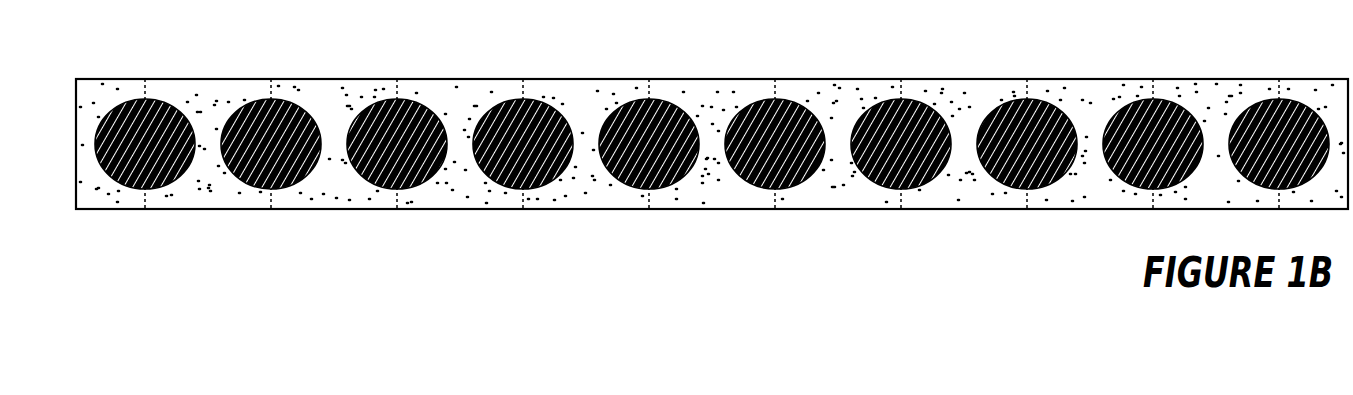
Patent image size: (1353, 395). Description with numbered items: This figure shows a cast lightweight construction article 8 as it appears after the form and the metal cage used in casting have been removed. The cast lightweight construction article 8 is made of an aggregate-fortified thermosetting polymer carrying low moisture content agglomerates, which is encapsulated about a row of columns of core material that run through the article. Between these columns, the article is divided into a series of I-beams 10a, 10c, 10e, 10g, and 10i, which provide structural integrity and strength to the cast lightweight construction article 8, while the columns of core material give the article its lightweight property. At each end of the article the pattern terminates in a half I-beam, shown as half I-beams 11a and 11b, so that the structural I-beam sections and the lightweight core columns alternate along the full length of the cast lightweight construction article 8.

The cast lightweight construction article 8 is at (245, 250).
The I-beam 10a is at (208, 79).
The I-beam 10c is at (460, 79).
The I-beam 10e is at (712, 79).
The I-beam 10g is at (964, 79).
The I-beam 10i is at (1216, 79).
The half I-beam 11a is at (110, 79).
The half I-beam 11b is at (1313, 79).